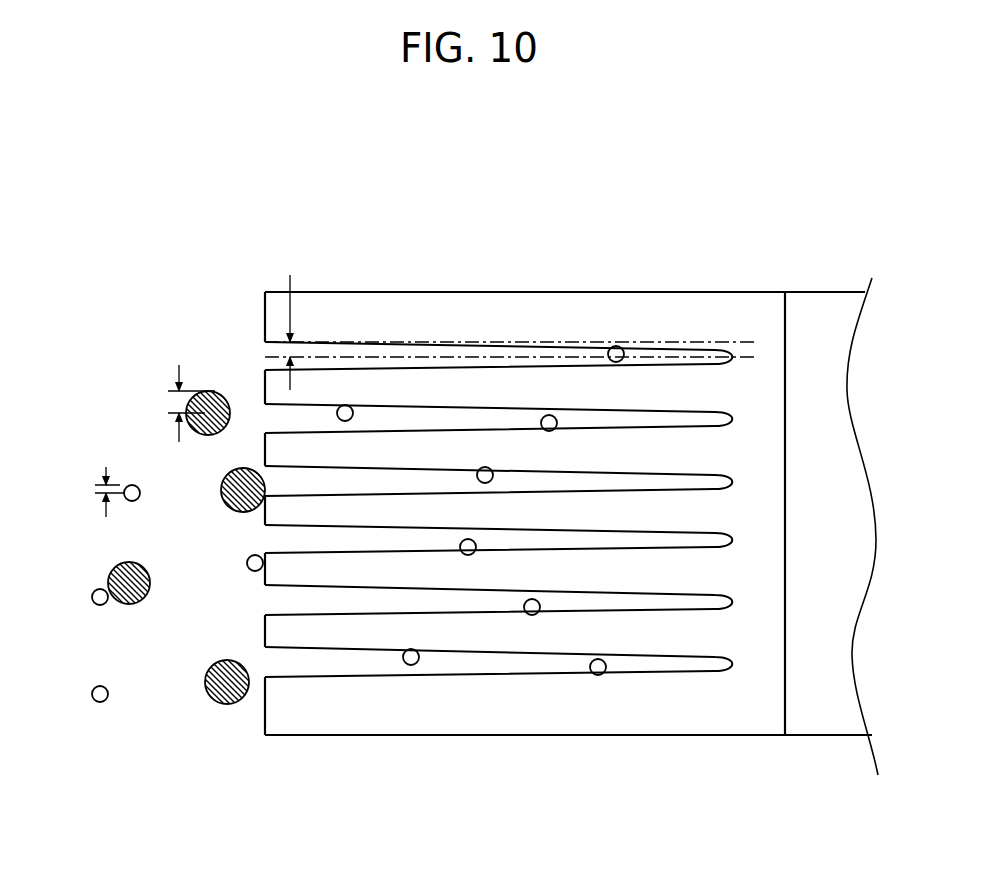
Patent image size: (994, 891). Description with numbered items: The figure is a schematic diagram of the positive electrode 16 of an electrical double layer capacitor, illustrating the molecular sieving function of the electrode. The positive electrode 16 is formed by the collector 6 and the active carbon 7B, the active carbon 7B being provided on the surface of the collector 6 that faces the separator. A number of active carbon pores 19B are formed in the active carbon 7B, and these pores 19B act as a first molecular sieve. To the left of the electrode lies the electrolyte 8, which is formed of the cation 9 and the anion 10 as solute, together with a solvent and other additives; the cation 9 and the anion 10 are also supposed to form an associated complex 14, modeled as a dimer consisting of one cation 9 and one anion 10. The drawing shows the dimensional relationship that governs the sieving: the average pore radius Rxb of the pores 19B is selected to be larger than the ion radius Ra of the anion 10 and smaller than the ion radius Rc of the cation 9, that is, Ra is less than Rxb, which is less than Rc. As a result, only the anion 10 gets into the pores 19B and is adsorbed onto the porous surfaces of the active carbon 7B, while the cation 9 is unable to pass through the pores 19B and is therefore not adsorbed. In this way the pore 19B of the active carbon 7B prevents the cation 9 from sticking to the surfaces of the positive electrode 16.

The collector 6 is at (813, 703).
The active carbon 7B is at (703, 328).
The electrolyte 8 is at (265, 235).
The cation 9 is at (225, 692).
The anion 10 is at (598, 675).
The associated complex 14 is at (125, 613).
The positive electrode 16 is at (270, 233).
The active carbon pore 19B is at (712, 482).
The average pore radius Rxb is at (376, 313).
The ion radius of cation Rc is at (170, 403).
The ion radius of anion Ra is at (93, 492).